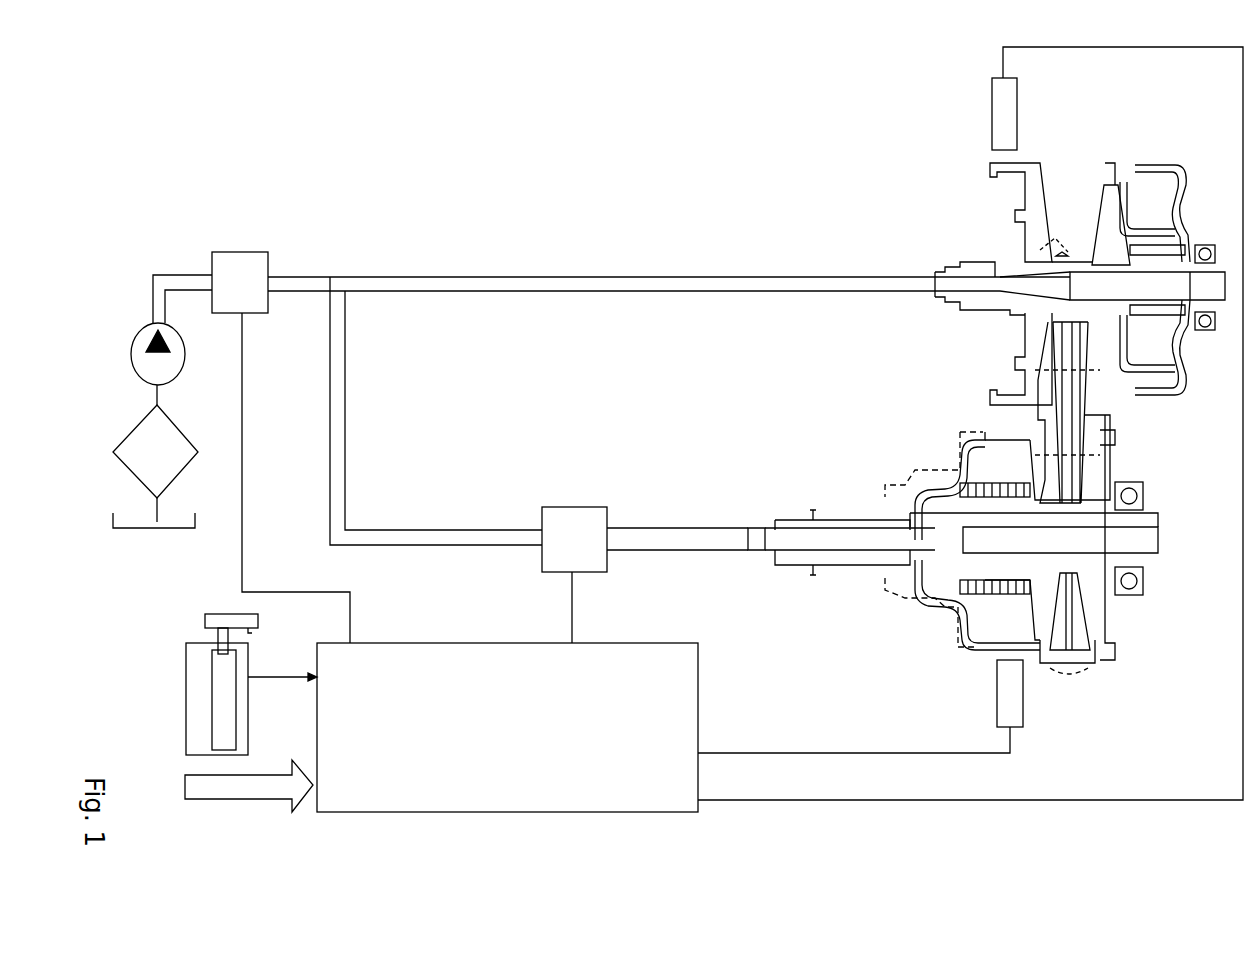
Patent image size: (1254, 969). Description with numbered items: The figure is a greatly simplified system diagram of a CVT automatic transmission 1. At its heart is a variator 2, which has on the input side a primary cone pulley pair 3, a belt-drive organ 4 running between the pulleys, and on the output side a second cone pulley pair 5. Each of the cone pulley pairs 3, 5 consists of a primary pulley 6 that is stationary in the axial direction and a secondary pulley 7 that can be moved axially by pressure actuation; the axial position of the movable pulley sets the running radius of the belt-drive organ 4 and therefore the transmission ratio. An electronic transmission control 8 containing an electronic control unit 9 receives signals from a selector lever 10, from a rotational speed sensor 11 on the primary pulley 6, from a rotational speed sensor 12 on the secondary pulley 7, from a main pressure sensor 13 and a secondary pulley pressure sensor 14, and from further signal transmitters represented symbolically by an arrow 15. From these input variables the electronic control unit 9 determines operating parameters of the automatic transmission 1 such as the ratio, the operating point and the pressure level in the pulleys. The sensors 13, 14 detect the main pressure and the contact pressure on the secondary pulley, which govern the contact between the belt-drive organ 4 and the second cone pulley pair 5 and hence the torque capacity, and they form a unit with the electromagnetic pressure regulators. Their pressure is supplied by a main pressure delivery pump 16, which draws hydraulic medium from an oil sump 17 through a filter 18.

The automatic transmission 1 is at (940, 213).
The variator 2 is at (1022, 247).
The cone pulley pair 3 is at (1135, 153).
The belt-drive organ 4 is at (1093, 363).
The second cone pulley pair 5 is at (1130, 620).
The primary pulley 6 is at (1105, 213).
The secondary pulley 7 is at (1066, 672).
The electronic transmission control 8 is at (780, 459).
The electronic control unit 9 is at (507, 727).
The selector lever 10 is at (185, 672).
The rotational speed sensor 11 is at (1017, 120).
The rotational speed sensor 12 is at (1000, 707).
The main pressure sensor 13 is at (641, 447).
The secondary pulley pressure sensor 14 is at (738, 575).
The arrow 15 is at (228, 790).
The main pressure delivery pump 16 is at (135, 370).
The oil sump 17 is at (120, 498).
The filter 18 is at (145, 440).